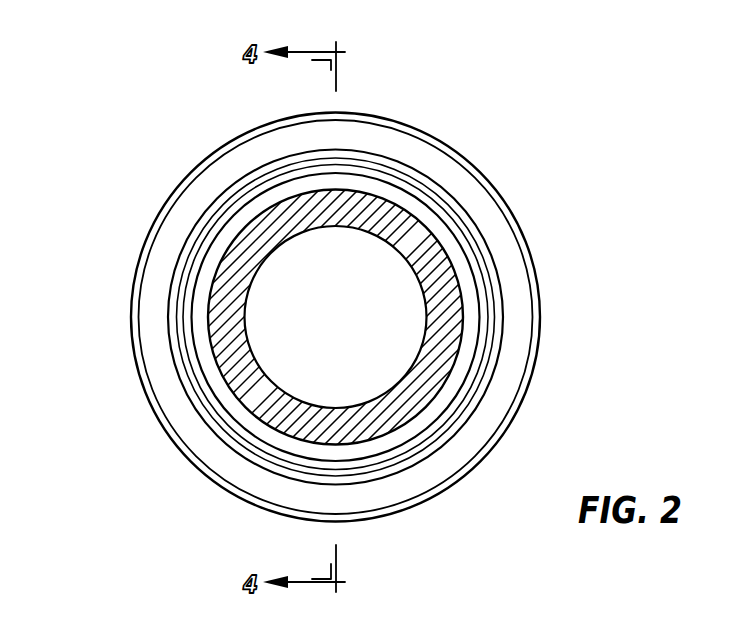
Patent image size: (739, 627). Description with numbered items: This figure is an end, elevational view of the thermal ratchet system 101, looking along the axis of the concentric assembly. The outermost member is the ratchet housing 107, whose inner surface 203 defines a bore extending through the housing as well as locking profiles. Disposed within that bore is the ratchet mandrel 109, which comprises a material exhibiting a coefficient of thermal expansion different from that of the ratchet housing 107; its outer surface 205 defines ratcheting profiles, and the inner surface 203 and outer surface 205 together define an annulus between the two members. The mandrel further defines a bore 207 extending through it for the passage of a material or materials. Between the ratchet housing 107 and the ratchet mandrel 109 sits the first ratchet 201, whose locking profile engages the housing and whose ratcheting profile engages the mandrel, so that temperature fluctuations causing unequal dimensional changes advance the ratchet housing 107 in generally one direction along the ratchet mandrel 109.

The thermal ratchet system 101 is at (340, 283).
The ratchet housing 107 is at (146, 214).
The ratchet mandrel 109 is at (212, 380).
The first ratchet 201 is at (497, 287).
The inner surface 203 is at (368, 473).
The outer surface 205 is at (430, 227).
The bore 207 is at (370, 343).